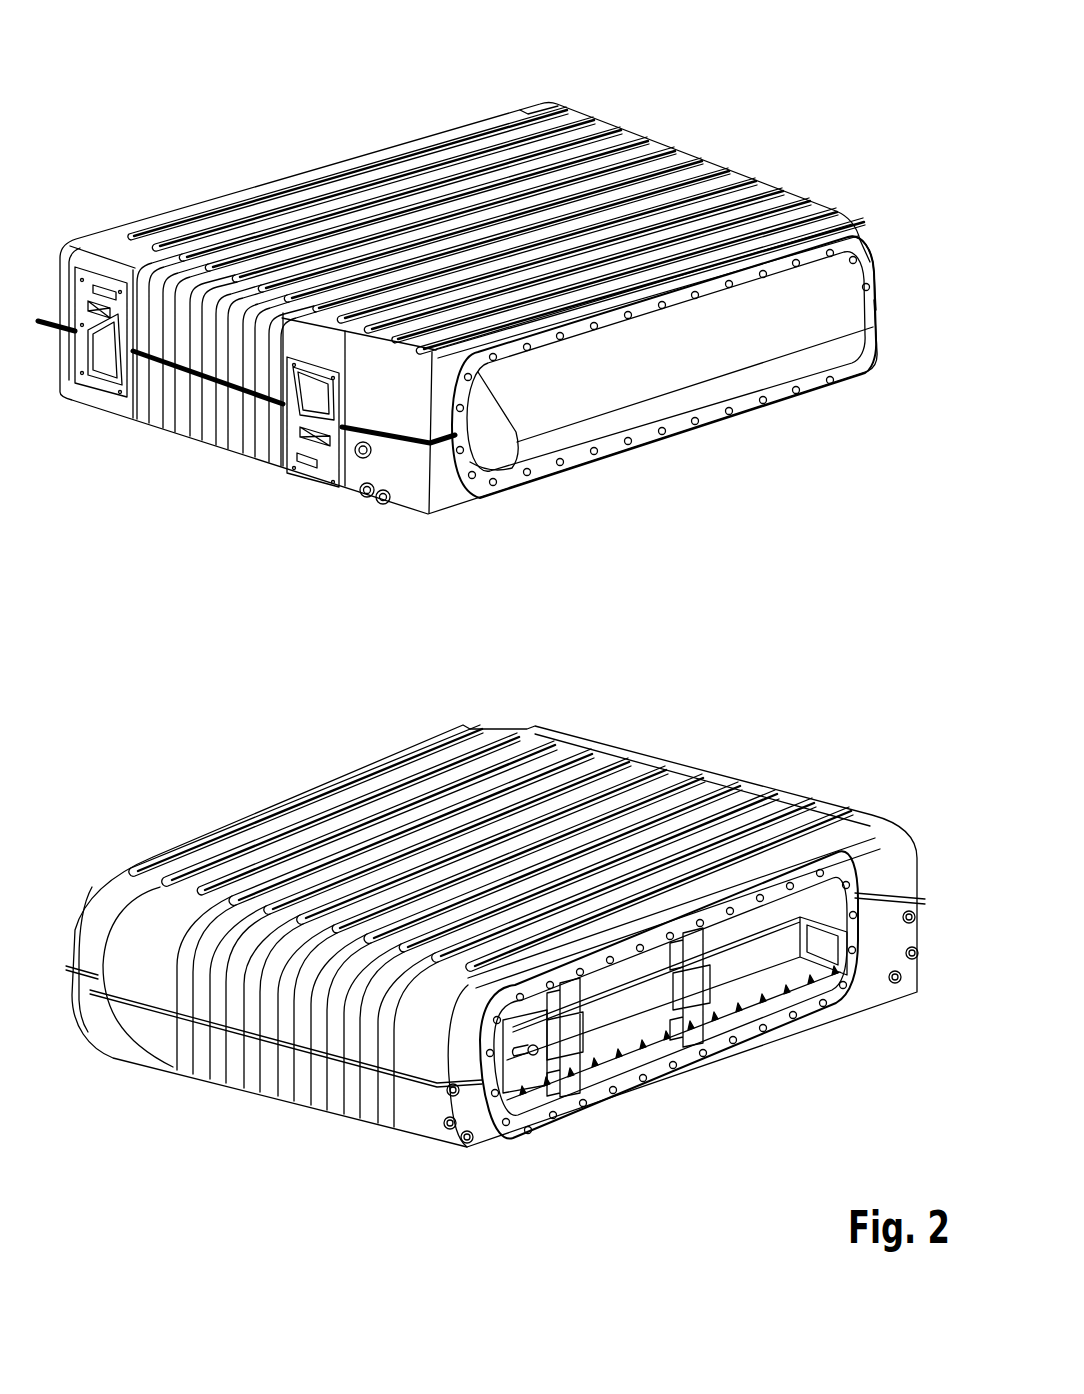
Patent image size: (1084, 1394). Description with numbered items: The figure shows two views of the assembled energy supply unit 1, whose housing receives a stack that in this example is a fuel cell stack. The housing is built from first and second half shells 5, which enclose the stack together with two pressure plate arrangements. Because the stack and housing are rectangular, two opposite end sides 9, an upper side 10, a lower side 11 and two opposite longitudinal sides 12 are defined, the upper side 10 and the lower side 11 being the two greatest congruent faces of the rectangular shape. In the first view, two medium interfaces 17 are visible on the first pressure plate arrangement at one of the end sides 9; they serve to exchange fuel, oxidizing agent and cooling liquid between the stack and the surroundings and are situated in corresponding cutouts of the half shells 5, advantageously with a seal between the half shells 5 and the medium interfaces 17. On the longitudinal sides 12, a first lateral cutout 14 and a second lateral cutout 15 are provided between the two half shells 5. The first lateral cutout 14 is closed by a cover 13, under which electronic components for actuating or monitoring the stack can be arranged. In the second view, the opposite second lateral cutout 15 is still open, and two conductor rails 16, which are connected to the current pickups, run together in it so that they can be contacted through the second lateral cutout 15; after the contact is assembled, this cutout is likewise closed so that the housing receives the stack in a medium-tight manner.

The energy supply unit 1 is at (790, 76).
The half shells 5 is at (572, 127).
The end sides 9 is at (172, 457).
The upper side 10 is at (362, 128).
The lower side 11 is at (285, 782).
The longitudinal sides 12 is at (655, 468).
The cover 13 is at (858, 353).
The first lateral cutout 14 is at (862, 268).
The second lateral cutout 15 is at (810, 1005).
The conductor rails 16 is at (830, 950).
The medium interfaces 17 is at (99, 386).